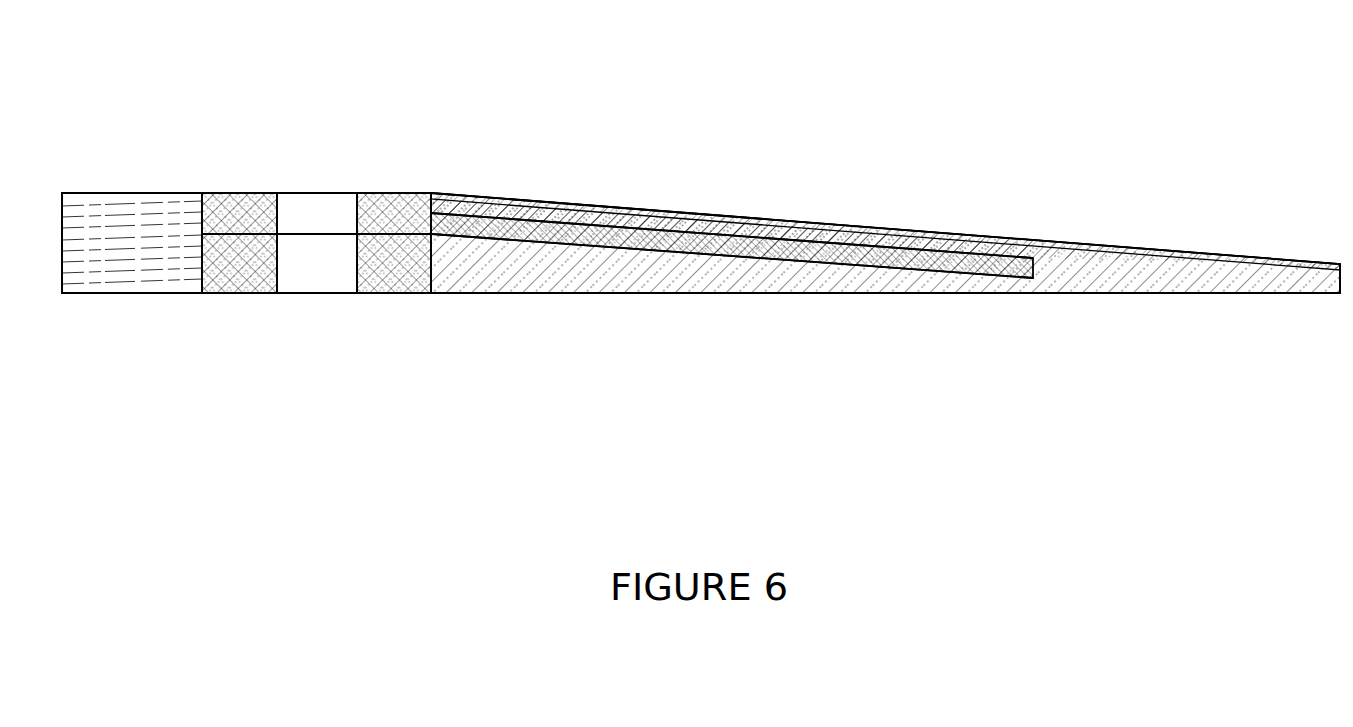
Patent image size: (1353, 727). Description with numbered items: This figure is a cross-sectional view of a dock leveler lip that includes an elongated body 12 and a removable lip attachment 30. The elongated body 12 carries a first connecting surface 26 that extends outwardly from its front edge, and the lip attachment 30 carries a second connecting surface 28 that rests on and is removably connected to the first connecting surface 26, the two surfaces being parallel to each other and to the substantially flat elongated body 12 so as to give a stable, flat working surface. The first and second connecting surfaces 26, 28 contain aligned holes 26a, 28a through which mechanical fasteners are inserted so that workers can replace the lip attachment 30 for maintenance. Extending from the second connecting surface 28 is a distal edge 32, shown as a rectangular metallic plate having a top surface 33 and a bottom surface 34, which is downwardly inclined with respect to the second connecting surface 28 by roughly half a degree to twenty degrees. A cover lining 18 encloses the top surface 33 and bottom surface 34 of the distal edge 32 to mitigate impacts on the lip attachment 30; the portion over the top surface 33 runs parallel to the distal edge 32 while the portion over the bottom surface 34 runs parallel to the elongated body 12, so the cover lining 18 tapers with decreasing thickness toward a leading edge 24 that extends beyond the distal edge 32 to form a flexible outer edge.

The elongated body 12 is at (128, 265).
The cover lining 18 is at (543, 265).
The leading edge 24 is at (1143, 268).
The first connecting surface 26 is at (243, 267).
The holes 26a is at (329, 296).
The second connecting surface 28 is at (243, 208).
The holes 28a is at (327, 190).
The lip attachment 30 is at (1022, 127).
The distal edge 32 is at (697, 242).
The top surface 33 is at (770, 236).
The bottom surface 34 is at (788, 262).